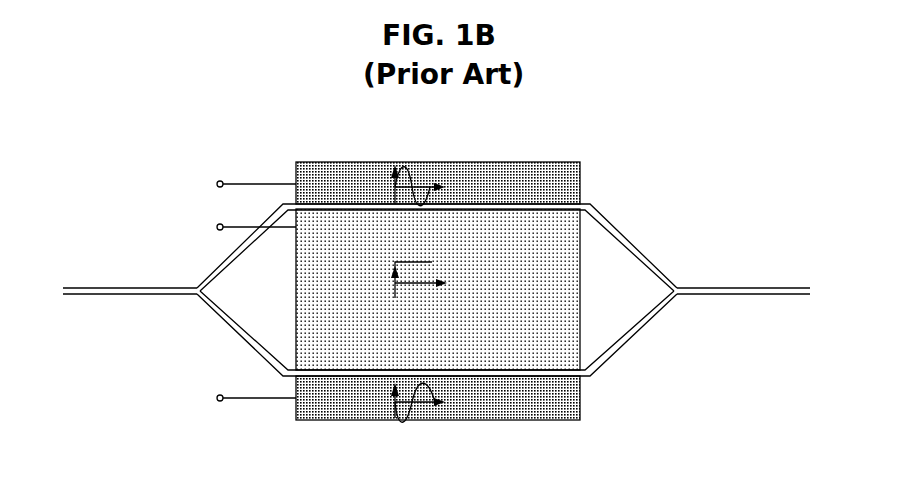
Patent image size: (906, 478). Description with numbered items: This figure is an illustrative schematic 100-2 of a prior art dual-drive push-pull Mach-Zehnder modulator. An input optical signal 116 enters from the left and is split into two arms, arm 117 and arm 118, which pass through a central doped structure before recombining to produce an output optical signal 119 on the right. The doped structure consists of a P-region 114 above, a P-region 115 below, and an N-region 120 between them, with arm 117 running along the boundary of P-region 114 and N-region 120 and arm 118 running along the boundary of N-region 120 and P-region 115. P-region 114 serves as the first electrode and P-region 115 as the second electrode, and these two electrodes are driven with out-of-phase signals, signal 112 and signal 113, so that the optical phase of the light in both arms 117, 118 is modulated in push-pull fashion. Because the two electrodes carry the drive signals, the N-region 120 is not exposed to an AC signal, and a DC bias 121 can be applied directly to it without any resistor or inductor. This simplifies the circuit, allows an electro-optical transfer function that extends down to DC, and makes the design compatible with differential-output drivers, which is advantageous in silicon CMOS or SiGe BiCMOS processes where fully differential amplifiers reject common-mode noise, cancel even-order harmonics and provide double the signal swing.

The illustrative schematic of a prior art dual-drive push-pull MZM 100-2 is at (134, 62).
The signal 112 is at (224, 180).
The signal 113 is at (264, 401).
The P-region 114 is at (531, 173).
The P-region 115 is at (566, 412).
The input optical signal 116 is at (113, 295).
The arm 117 is at (461, 203).
The arm 118 is at (520, 378).
The optical signal 119 is at (745, 294).
The N-region 120 is at (566, 318).
The DC bias 121 is at (219, 232).